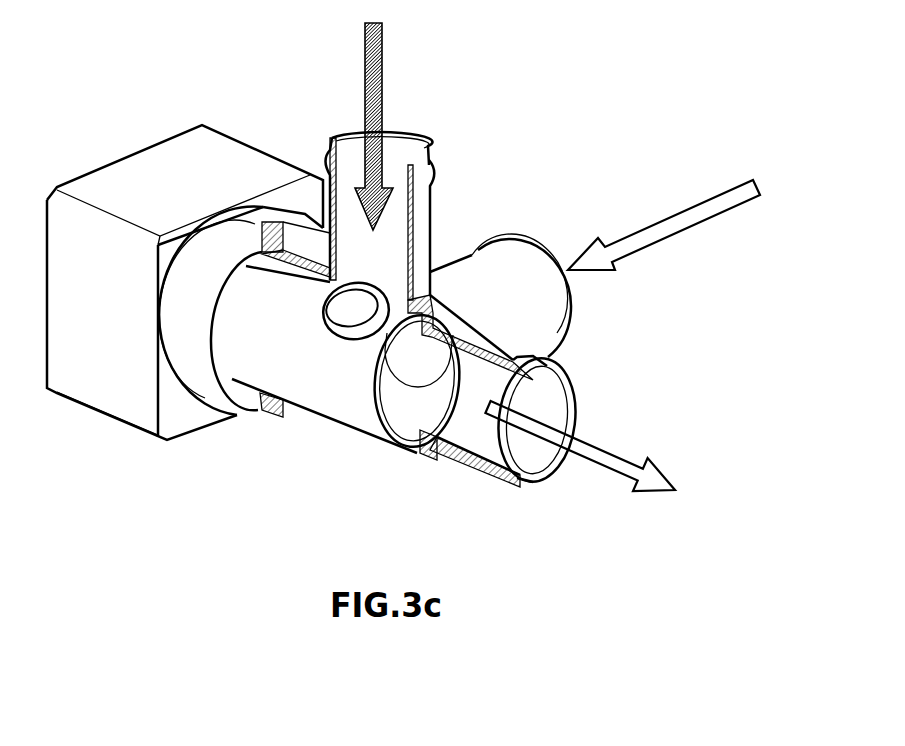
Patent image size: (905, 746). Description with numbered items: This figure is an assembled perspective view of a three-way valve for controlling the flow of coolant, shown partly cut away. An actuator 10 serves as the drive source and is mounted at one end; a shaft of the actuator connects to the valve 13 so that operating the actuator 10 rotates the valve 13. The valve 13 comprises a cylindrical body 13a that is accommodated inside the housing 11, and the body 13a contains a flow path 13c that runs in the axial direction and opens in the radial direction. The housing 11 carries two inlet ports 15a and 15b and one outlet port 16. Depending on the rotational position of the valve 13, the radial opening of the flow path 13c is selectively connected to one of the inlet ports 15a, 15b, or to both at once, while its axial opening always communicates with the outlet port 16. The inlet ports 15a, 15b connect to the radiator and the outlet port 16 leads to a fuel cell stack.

The actuator 10 is at (108, 377).
The cylindrical body 13a is at (257, 362).
The valve 13 is at (367, 437).
The flow path 13c is at (357, 325).
The housing 11 is at (423, 457).
The outlet port 16 is at (487, 467).
The inlet port 15a is at (422, 232).
The inlet port 15b is at (497, 287).